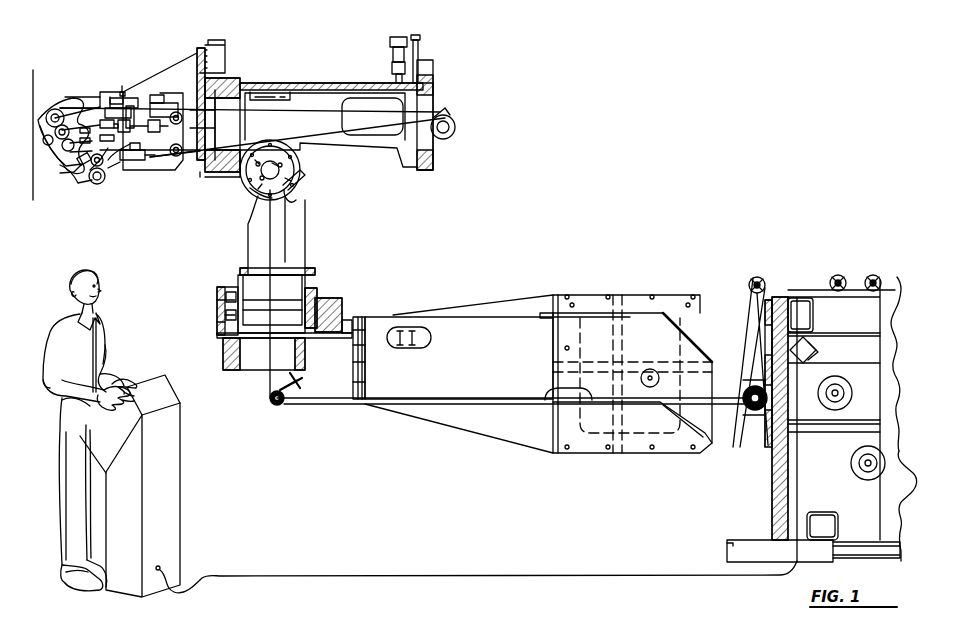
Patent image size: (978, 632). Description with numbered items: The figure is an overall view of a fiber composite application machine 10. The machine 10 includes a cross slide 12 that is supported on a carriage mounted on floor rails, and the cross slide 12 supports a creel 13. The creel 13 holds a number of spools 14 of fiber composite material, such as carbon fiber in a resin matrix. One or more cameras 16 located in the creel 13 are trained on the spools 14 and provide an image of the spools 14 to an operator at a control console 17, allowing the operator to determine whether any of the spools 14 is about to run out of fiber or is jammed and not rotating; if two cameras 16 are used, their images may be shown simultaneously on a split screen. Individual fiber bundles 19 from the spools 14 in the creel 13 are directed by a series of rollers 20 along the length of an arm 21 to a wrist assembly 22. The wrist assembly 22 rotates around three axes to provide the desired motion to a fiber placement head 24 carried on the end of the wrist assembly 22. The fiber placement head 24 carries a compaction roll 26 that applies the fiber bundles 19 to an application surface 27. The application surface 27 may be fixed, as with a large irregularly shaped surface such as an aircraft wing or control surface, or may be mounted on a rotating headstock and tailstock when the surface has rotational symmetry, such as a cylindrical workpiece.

The fiber composite machine 10 is at (598, 148).
The cross slide 12 is at (727, 550).
The creel 13 is at (858, 320).
The spools 14 is at (841, 397).
The cameras 16 is at (812, 350).
The control console 17 is at (143, 368).
The fiber bundles 19 is at (355, 410).
The rollers 20 is at (283, 402).
The arm 21 is at (492, 300).
The wrist assembly 22 is at (325, 234).
The fiber placement head 24 is at (152, 64).
The compaction roll 26 is at (40, 115).
The application surface 27 is at (33, 195).